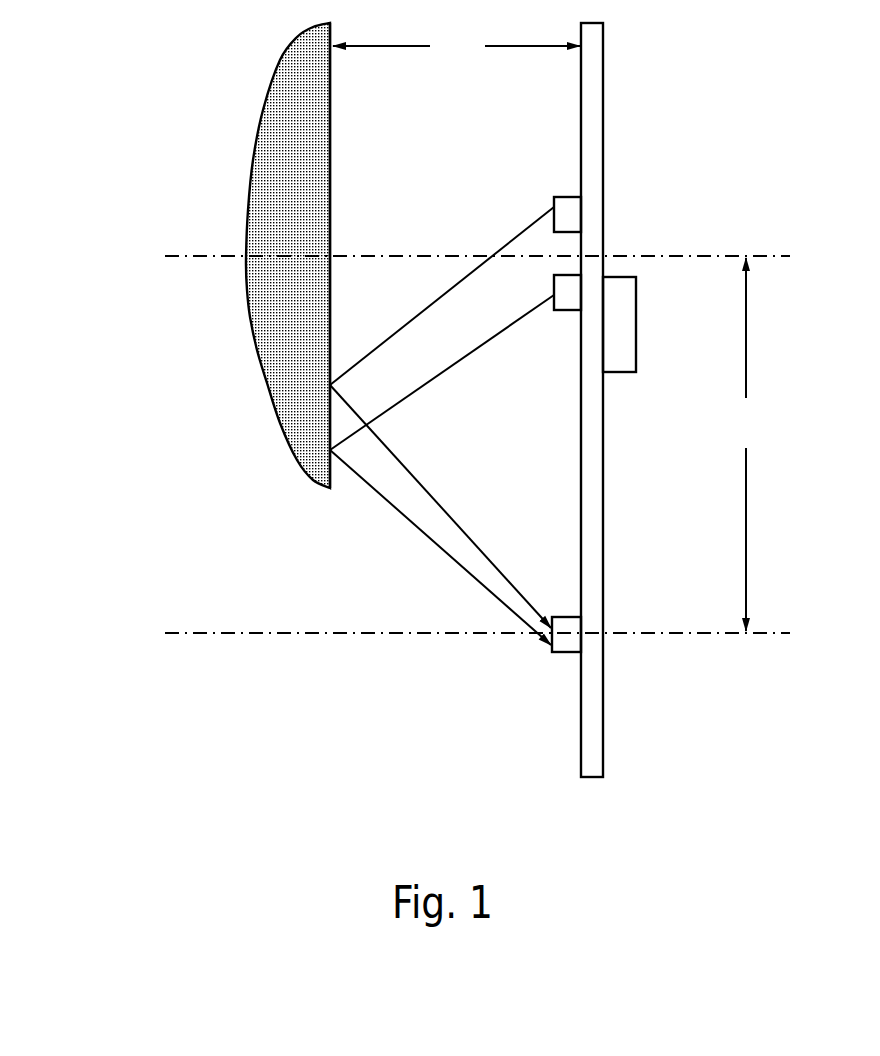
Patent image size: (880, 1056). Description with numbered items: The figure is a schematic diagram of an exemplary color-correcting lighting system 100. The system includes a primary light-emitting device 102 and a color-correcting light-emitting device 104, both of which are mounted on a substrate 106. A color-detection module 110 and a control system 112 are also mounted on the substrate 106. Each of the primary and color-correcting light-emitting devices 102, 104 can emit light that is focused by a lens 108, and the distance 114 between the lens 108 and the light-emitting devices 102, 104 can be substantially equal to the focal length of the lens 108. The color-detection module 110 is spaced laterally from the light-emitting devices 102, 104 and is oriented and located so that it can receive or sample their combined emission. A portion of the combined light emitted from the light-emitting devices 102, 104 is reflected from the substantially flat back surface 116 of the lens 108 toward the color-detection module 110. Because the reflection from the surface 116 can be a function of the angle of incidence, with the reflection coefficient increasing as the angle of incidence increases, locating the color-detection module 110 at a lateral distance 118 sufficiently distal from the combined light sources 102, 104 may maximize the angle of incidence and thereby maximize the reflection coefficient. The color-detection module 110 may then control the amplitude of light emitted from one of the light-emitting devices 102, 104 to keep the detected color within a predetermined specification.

The color-correcting lighting system 100 is at (190, 364).
The primary light-emitting device 102 is at (554, 202).
The color-correcting light-emitting device 104 is at (569, 311).
The substrate 106 is at (604, 455).
The lens 108 is at (272, 227).
The color-detection module 110 is at (575, 623).
The control system 112 is at (637, 335).
The distance 114 is at (456, 46).
The back surface 116 is at (331, 202).
The lateral distance 118 is at (746, 444).